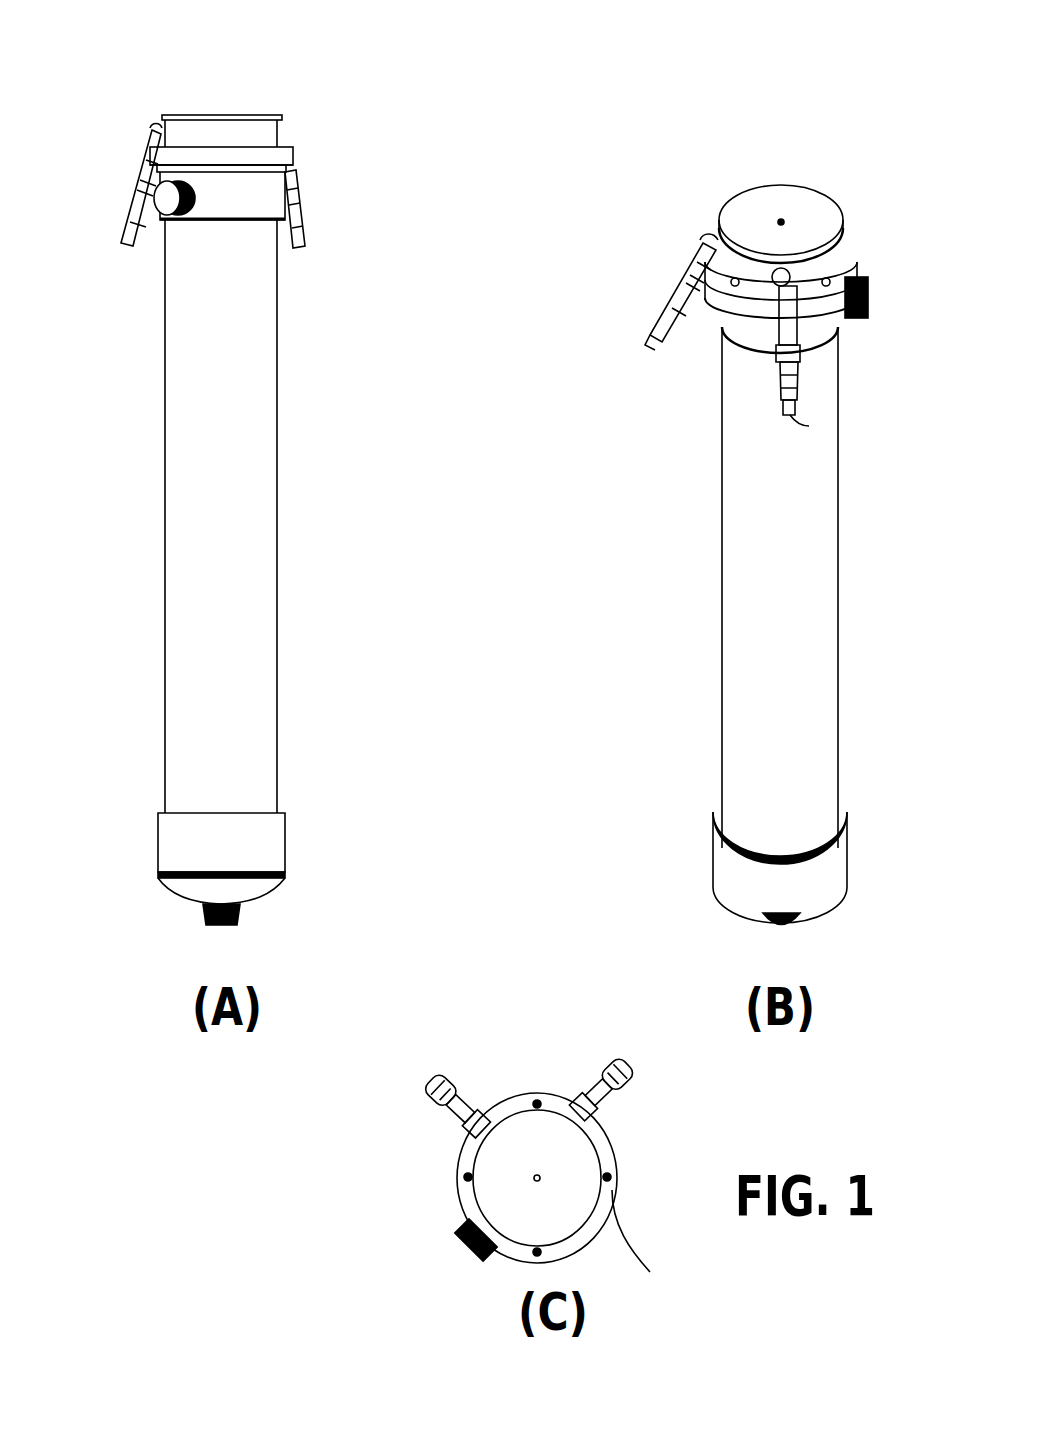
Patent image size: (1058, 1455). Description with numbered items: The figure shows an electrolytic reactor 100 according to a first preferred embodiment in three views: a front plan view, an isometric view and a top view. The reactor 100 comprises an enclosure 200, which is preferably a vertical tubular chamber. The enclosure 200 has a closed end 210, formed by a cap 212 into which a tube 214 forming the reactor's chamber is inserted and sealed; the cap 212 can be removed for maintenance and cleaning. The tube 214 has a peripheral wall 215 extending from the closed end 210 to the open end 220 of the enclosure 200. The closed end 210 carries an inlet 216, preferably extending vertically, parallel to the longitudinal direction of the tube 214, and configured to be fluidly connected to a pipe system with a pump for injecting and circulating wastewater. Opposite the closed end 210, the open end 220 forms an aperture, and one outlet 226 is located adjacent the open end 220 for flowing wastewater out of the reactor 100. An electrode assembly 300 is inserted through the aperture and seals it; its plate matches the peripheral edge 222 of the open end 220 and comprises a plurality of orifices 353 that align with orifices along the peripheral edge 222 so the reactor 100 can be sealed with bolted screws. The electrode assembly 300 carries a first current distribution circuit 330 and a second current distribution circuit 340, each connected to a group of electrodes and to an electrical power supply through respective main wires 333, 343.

The electrolytic reactor 100 is at (609, 101).
The enclosure 200 is at (322, 499).
The closed end 210 is at (300, 812).
The cap 212 is at (289, 845).
The tube 214 is at (279, 587).
The peripheral wall 215 is at (208, 513).
The inlet 216 is at (246, 930).
The open end 220 is at (322, 213).
The peripheral edge 222 is at (287, 170).
The outlet 226 is at (186, 237).
The electrode assembly 300 is at (195, 100).
The first current distribution circuit 330 is at (453, 1074).
The main wire 333 is at (297, 245).
The second current distribution circuit 340 is at (605, 1060).
The main wire 343 is at (127, 237).
The orifices 353 is at (675, 1251).